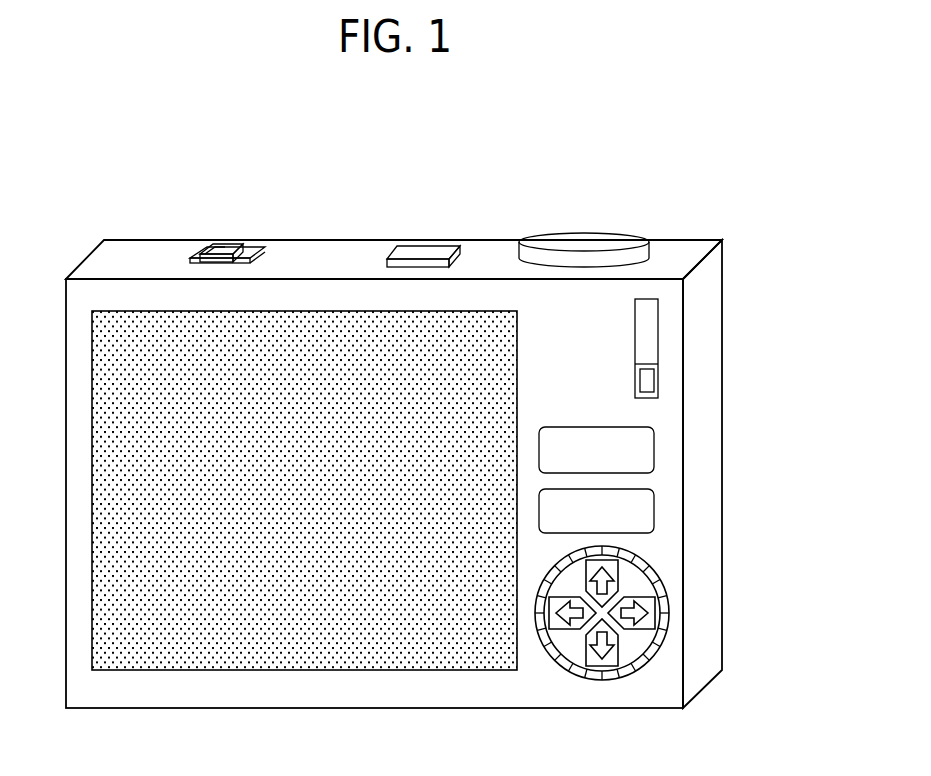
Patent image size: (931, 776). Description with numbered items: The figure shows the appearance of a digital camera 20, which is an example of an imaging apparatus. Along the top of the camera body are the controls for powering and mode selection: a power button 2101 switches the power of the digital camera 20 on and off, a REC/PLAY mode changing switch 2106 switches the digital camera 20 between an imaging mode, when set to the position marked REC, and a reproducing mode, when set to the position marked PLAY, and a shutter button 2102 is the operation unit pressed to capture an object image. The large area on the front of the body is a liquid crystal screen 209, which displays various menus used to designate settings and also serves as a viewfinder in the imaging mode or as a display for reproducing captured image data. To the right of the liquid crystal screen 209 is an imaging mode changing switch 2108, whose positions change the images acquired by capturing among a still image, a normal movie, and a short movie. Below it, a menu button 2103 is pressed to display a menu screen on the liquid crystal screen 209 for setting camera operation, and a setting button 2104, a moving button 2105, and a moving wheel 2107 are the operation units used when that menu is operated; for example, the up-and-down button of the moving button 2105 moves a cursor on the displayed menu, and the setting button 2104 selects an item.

The digital camera 20 is at (122, 238).
The liquid crystal screen 209 is at (290, 672).
The power button 2101 is at (425, 252).
The shutter button 2102 is at (585, 243).
The menu button 2103 is at (643, 448).
The setting button 2104 is at (643, 510).
The moving button 2105 is at (660, 612).
The REC/PLAY mode changing switch 2106 is at (233, 248).
The moving wheel 2107 is at (643, 665).
The imaging mode changing switch 2108 is at (657, 378).